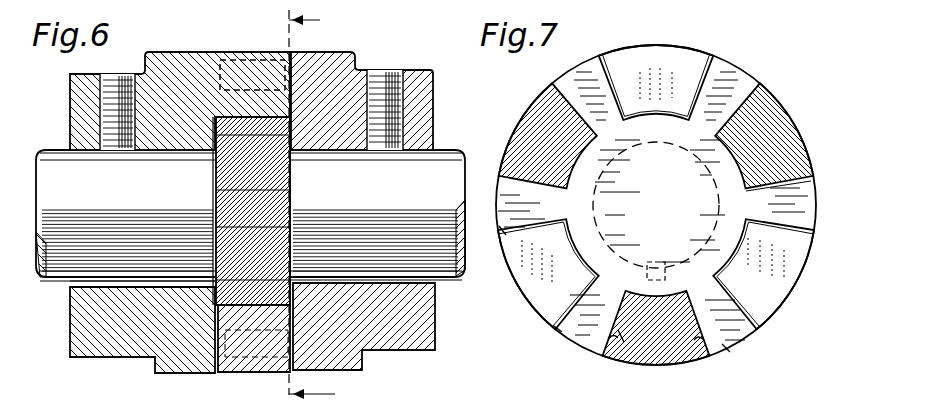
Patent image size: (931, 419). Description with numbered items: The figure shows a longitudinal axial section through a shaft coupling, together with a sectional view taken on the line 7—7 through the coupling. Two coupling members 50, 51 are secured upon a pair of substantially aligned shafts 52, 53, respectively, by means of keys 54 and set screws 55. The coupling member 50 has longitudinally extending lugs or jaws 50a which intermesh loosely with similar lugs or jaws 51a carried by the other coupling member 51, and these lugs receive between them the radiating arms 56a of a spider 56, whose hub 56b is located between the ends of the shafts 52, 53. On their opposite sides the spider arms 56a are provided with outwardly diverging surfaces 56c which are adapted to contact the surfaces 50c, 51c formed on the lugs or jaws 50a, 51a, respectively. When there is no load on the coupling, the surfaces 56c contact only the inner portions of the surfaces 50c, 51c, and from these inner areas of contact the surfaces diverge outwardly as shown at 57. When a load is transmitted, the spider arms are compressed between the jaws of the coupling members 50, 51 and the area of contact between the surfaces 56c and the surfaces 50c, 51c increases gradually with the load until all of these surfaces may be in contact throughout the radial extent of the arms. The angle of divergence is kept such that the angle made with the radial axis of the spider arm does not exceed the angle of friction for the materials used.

In FIG. 6, the coupling member 50 is at (116, 350).
In FIG. 6, the lugs or jaws 50a is at (244, 55).
In FIG. 7, the lugs or jaws 50a is at (652, 70).
In FIG. 7, the surfaces 50c is at (558, 330).
In FIG. 6, the coupling member 51 is at (406, 345).
In FIG. 6, the lugs or jaws 51a is at (241, 372).
In FIG. 7, the lugs or jaws 51a is at (529, 120).
In FIG. 7, the surfaces 51c is at (768, 385).
In FIG. 6, the shaft 52 is at (54, 162).
In FIG. 6, the shaft 53 is at (444, 163).
In FIG. 6, the keys 54 is at (73, 288).
In FIG. 6, the set screws 55 is at (383, 78).
In FIG. 6, the spider 56 is at (231, 172).
In FIG. 7, the spider 56 is at (656, 205).
In FIG. 6, the radiating arms 56a is at (216, 115).
In FIG. 7, the radiating arms 56a is at (772, 352).
In FIG. 6, the hub 56b is at (292, 197).
In FIG. 7, the hub 56b is at (656, 211).
In FIG. 7, the outwardly diverging surfaces 56c is at (751, 322).
In FIG. 7, the divergence of surfaces 57 is at (612, 338).
In FIG. 6, the section line 7— 7 is at (320, 208).